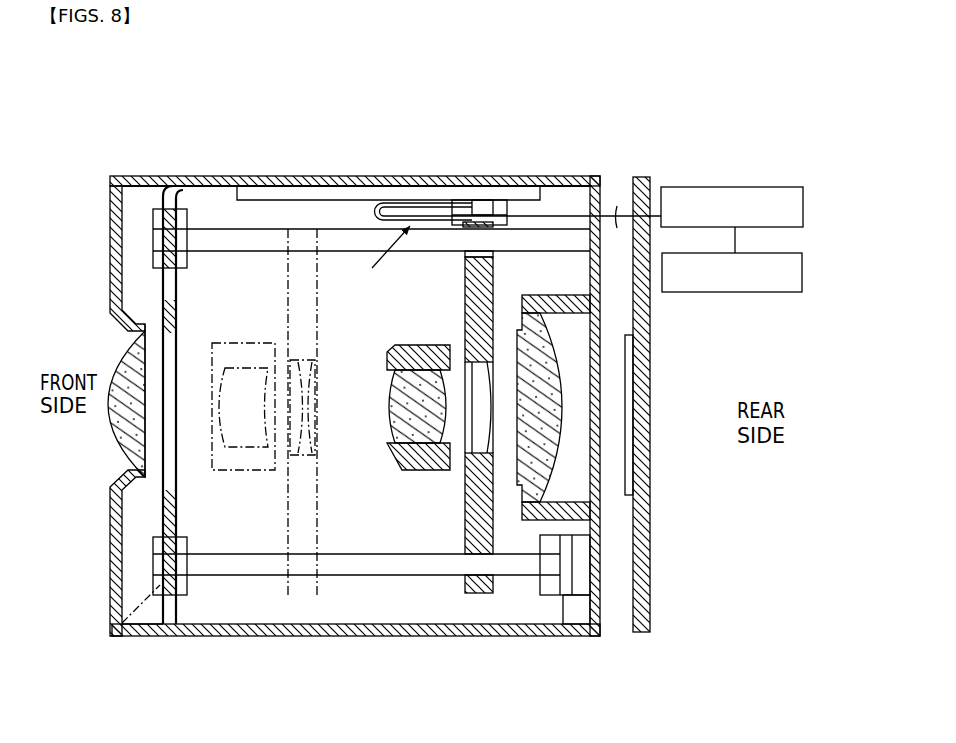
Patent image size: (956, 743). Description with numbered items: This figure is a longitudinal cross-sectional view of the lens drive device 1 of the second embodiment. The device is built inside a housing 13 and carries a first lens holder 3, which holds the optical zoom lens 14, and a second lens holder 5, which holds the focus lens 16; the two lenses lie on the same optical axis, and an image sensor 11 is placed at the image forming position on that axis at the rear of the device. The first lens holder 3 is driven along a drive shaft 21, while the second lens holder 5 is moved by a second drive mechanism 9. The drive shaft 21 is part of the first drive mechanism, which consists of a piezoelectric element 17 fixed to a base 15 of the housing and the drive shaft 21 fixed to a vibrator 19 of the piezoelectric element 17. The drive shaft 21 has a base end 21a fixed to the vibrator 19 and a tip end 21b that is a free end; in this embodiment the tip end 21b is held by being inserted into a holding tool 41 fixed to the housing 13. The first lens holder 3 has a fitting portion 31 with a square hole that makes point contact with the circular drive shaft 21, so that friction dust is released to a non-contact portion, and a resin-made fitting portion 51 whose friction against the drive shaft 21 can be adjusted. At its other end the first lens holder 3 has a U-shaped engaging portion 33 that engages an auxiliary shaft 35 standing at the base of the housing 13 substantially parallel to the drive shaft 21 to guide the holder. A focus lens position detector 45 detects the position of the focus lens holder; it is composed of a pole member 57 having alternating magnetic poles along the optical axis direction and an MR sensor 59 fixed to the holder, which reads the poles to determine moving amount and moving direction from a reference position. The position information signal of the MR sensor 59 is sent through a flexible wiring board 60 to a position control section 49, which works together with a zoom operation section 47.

The lens drive device 1 is at (552, 130).
The first lens holder 3 is at (400, 475).
The second lens holder 5 is at (462, 532).
The second drive mechanism 9 is at (511, 582).
The image sensor 11 is at (630, 405).
The housing 13 is at (243, 175).
The optical zoom lens 14 is at (390, 402).
The base 15 is at (603, 198).
The focus lens 16 is at (467, 455).
The piezoelectric element 17 is at (563, 600).
The vibrator 19 is at (563, 572).
The drive shaft 21 is at (348, 563).
The base end 21a is at (553, 565).
The tip end 21b is at (112, 627).
The fitting portion 31 is at (467, 592).
The engaging portion 33 is at (482, 217).
The auxiliary shaft 35 is at (353, 243).
The holding tool 41 is at (153, 553).
The focus lens position detector 45 is at (376, 261).
The zoom operation section 47 is at (803, 265).
The position control section 49 is at (803, 205).
The fitting portion 51 is at (481, 580).
The pole member 57 is at (266, 196).
The MR sensor 59 is at (472, 207).
The flexible wiring board 60 is at (403, 200).